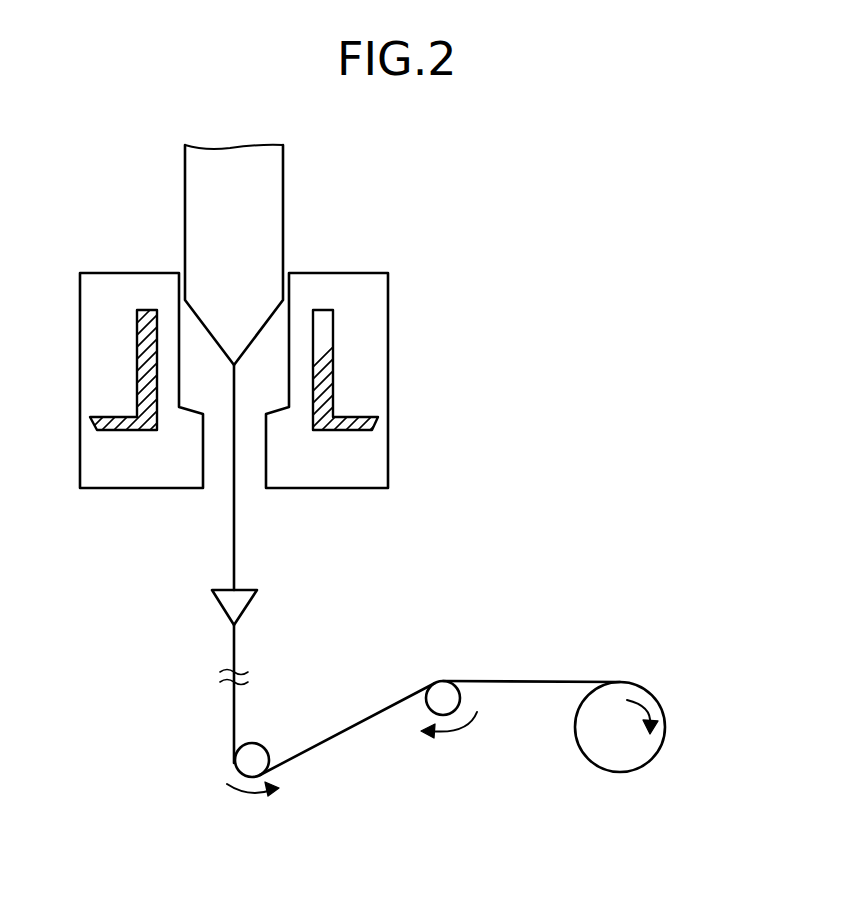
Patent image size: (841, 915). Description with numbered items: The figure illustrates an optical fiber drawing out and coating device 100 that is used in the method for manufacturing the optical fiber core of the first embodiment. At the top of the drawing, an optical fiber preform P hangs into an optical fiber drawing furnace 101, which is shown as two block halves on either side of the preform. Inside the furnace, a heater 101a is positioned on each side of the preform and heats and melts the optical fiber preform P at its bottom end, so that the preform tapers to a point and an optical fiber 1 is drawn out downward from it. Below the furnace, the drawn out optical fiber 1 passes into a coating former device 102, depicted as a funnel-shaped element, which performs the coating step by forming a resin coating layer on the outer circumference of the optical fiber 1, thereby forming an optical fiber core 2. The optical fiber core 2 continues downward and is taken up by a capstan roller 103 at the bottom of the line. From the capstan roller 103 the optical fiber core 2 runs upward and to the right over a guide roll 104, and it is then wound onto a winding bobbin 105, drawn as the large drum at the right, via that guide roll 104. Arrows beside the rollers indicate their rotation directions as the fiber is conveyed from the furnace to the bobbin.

The optical fiber drawing out and coating device 100 is at (468, 202).
The optical fiber preform P is at (283, 178).
The optical fiber drawing furnace 101 is at (349, 272).
The heater 101a is at (333, 366).
The optical fiber 1 is at (234, 532).
The coating former device 102 is at (247, 610).
The optical fiber core 2 is at (234, 642).
The capstan roller 103 is at (250, 744).
The guide roll 104 is at (460, 700).
The winding bobbin 105 is at (618, 772).